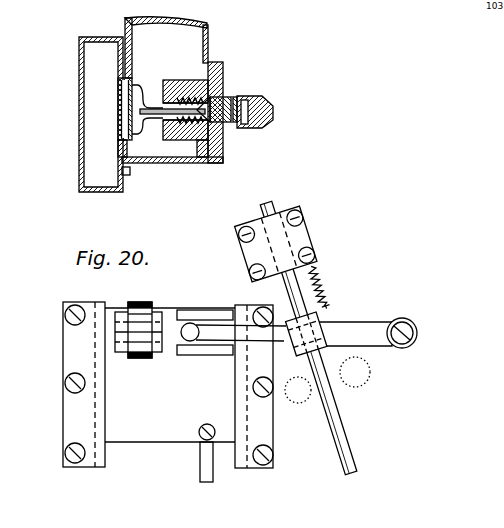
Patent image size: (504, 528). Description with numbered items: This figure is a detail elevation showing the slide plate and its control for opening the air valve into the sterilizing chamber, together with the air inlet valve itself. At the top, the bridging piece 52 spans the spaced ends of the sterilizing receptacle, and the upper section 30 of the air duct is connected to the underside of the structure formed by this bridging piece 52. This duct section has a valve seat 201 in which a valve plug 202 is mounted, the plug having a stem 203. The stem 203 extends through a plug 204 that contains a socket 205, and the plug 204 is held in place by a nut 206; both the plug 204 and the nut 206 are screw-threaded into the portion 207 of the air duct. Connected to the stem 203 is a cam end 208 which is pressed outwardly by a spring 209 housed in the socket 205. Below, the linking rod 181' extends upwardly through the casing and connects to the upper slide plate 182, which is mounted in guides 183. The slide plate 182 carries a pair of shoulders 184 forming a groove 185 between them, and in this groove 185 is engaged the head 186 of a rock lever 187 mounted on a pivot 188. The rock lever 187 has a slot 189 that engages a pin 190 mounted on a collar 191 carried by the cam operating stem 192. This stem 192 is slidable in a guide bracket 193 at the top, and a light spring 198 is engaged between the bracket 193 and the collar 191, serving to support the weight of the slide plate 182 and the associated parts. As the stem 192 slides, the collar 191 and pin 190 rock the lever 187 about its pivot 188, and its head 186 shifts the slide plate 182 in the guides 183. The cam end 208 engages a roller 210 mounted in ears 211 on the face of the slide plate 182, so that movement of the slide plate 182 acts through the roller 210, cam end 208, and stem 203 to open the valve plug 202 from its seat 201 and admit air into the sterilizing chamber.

The upper section of air duct 30 is at (191, 42).
The bridging piece 52 is at (80, 118).
The valve seat 201 is at (132, 68).
The valve plug 202 is at (120, 108).
The stem 203 is at (150, 110).
The plug 204 is at (197, 141).
The socket 205 is at (185, 128).
The nut 206 is at (224, 148).
The portion of air duct 207 is at (221, 62).
The cam end 208 is at (249, 97).
The spring 209 is at (213, 88).
The linking rod 181' is at (190, 460).
The upper slide plate 182 is at (164, 425).
The guides 183 is at (67, 425).
The shoulders 184 is at (203, 312).
The groove 185 is at (207, 349).
The head 186 is at (187, 336).
The rock lever 187 is at (349, 332).
The pivot 188 is at (412, 348).
The slot 189 is at (318, 344).
The pin 190 is at (304, 348).
The collar 191 is at (292, 348).
The cam operating stem 192 is at (356, 452).
The guide bracket 193 is at (299, 234).
The light spring 198 is at (323, 292).
The roller 210 is at (141, 302).
The ears 211 is at (123, 346).